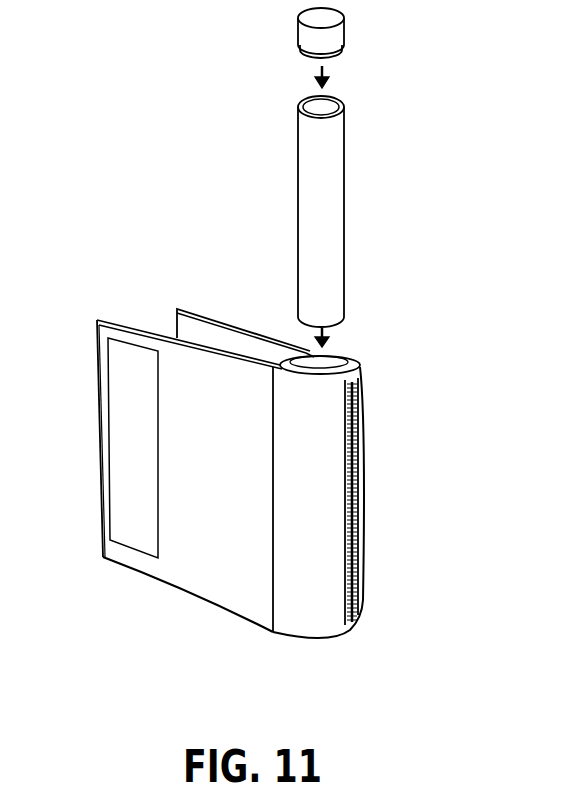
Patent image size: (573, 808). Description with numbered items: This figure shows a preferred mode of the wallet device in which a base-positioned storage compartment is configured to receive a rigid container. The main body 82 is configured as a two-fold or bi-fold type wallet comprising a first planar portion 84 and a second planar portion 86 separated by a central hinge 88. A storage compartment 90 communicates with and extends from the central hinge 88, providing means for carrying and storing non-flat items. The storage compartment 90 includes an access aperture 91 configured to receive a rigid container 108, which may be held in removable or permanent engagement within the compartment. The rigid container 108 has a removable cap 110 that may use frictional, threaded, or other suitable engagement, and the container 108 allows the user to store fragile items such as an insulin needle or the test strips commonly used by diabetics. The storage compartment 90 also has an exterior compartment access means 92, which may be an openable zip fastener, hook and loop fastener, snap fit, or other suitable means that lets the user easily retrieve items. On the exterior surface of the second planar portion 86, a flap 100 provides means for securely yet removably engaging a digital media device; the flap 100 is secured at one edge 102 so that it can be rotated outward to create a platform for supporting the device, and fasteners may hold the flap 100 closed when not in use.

The main body 82 is at (133, 338).
The first planar portion 84 is at (217, 333).
The second planar portion 86 is at (202, 567).
The central hinge 88 is at (312, 355).
The storage compartment 90 is at (302, 598).
The access aperture 91 is at (320, 362).
The exterior compartment access means 92 is at (363, 593).
The flap 100 is at (133, 453).
The edge 102 is at (115, 422).
The rigid container 108 is at (343, 210).
The removable cap 110 is at (342, 43).